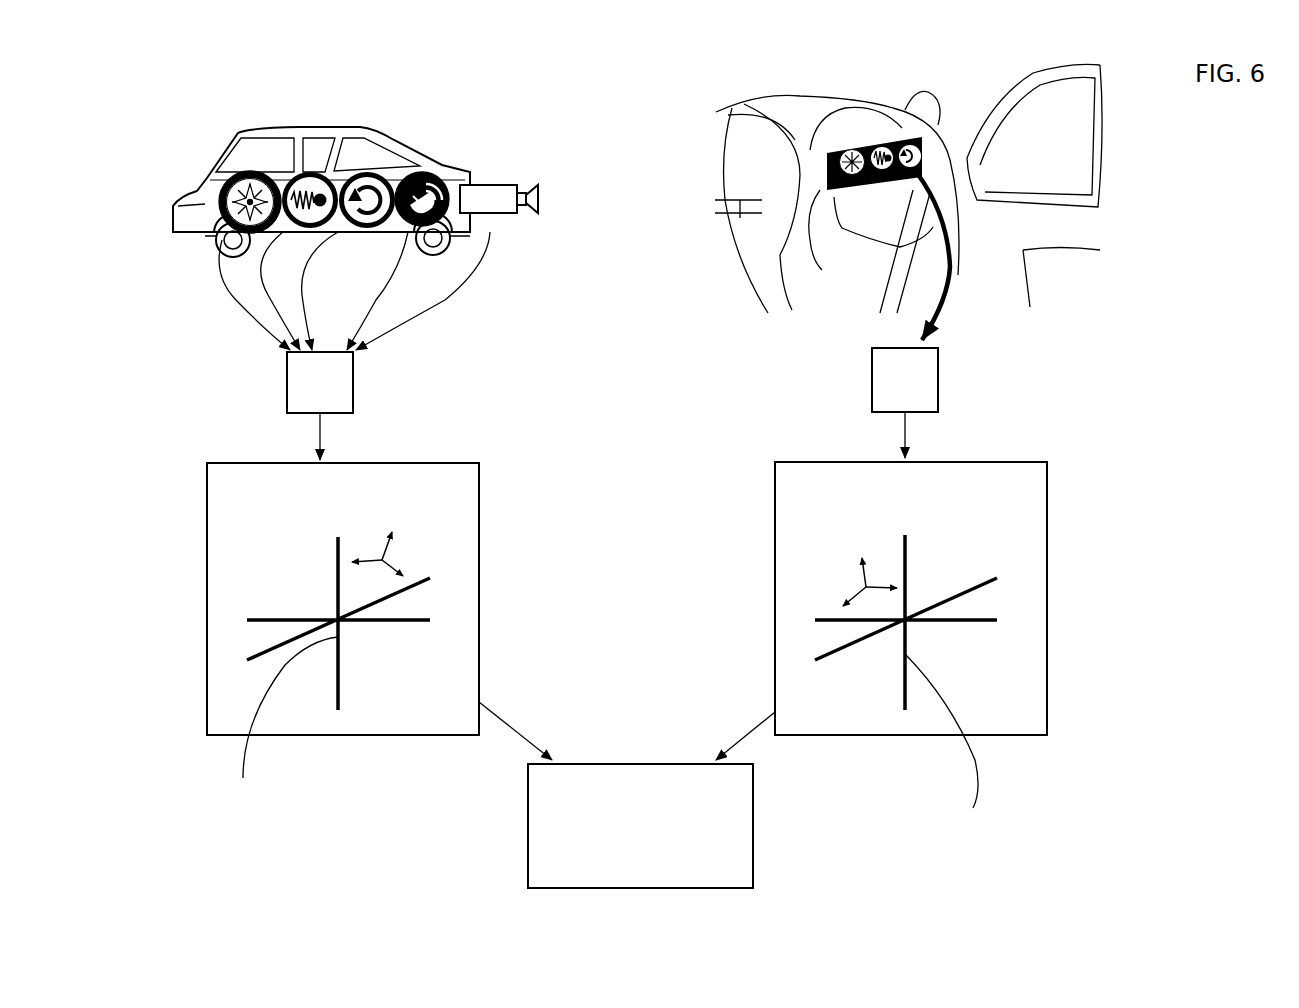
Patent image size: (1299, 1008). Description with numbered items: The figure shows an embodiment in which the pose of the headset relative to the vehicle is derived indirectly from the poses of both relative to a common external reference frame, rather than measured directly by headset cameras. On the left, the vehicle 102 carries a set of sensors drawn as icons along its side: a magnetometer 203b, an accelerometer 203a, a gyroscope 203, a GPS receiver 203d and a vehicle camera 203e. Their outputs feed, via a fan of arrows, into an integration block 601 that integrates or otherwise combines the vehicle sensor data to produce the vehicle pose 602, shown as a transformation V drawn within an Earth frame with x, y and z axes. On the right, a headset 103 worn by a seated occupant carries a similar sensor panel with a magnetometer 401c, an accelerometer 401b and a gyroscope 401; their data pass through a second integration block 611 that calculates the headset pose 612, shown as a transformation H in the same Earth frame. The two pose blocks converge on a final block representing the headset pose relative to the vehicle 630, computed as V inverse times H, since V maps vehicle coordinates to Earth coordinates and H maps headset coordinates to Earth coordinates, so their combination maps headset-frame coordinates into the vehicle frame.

The vehicle 102 is at (212, 150).
The magnetometer 203b is at (246, 173).
The accelerometer 203a is at (307, 173).
The gyroscope 203 is at (366, 175).
The GPS receiver 203d is at (414, 175).
The vehicle camera 203e is at (497, 184).
The integration of vehicle sensor data 601 is at (287, 388).
The vehicle pose in Earth frame 602 is at (415, 547).
The headset 103 is at (858, 187).
The magnetometer 401c is at (830, 150).
The accelerometer 401b is at (877, 150).
The gyroscope 401 is at (908, 148).
The integration of headset sensor data 611 is at (938, 402).
The headset pose in Earth frame 612 is at (835, 577).
The headset pose relative to vehicle 630 is at (528, 855).